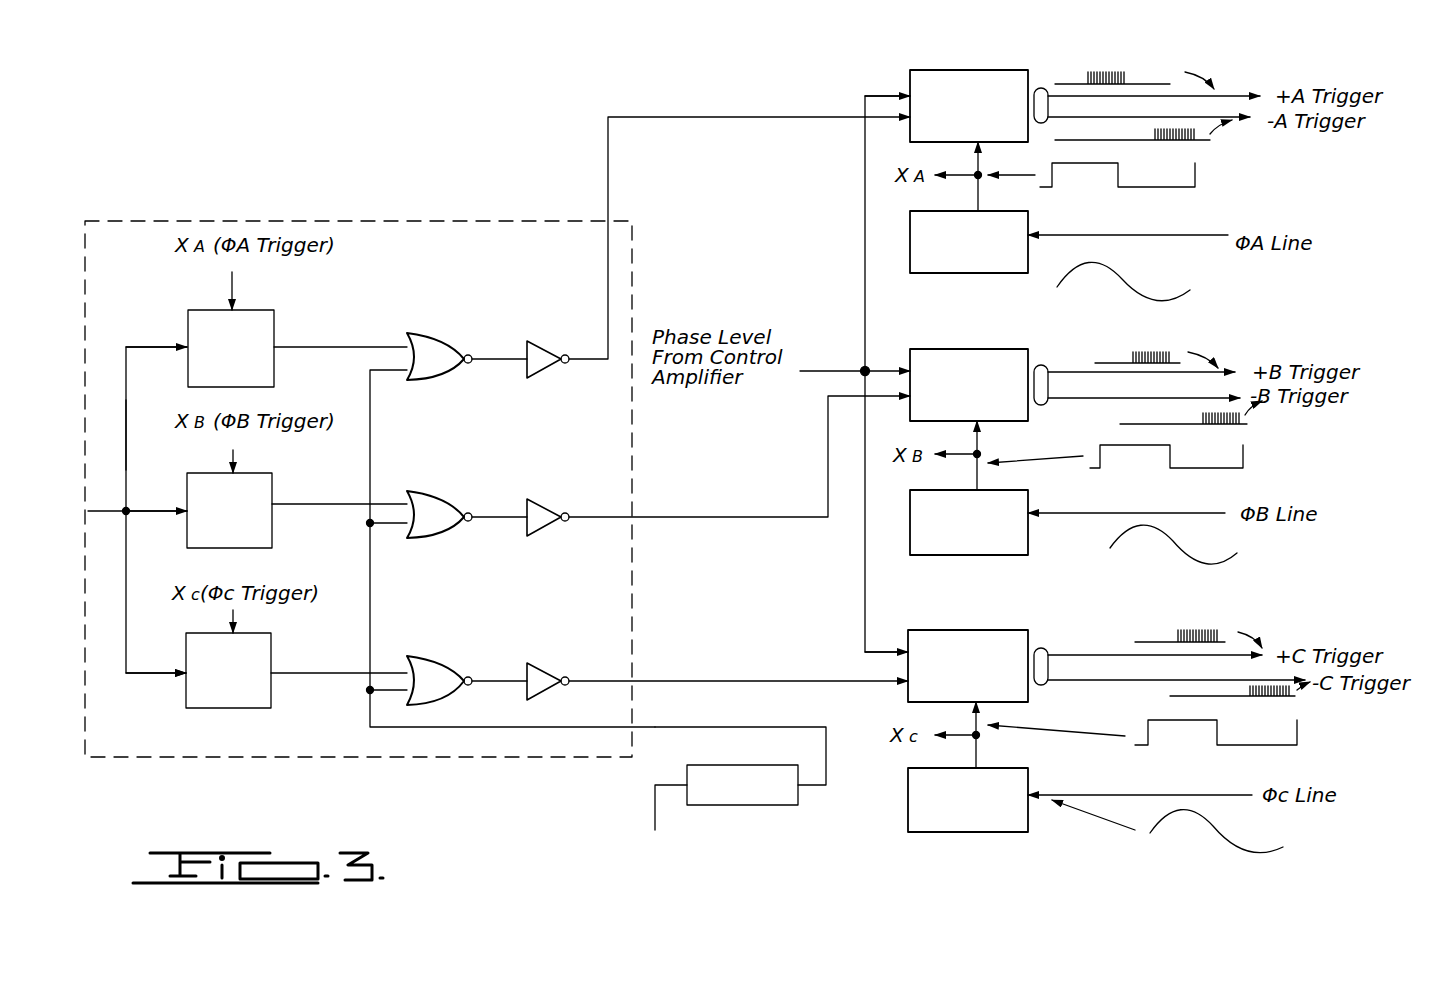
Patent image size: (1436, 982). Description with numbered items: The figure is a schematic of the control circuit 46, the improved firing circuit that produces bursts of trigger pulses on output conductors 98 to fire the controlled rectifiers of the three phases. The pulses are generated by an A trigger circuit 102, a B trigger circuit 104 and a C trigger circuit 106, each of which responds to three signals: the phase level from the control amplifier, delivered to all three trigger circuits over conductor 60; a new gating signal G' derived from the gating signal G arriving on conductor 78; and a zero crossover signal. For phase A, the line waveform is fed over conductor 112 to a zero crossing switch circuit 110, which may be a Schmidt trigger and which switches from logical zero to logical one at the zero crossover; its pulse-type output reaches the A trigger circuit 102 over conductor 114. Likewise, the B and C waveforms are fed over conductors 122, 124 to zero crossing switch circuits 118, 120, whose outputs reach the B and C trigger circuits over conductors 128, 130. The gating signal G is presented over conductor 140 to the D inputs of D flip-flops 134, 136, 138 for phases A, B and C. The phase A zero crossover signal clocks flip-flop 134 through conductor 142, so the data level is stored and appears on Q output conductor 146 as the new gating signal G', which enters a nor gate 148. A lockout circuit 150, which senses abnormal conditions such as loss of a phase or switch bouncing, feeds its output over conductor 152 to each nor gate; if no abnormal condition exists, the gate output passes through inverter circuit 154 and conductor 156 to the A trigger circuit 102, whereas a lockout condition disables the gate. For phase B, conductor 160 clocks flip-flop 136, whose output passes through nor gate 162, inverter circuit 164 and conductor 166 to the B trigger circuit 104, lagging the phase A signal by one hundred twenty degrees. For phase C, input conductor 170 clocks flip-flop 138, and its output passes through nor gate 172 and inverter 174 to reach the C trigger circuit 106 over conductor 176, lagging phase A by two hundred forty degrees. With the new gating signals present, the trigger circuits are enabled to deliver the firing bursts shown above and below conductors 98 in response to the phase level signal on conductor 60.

The control circuit 46 is at (752, 246).
The conductor 60 is at (841, 371).
The conductor 78 is at (98, 515).
The output conductors 98 is at (1041, 88).
The A trigger circuit 102 is at (970, 70).
The B trigger circuit 104 is at (940, 349).
The C trigger circuit 106 is at (930, 630).
The zero crossing switch circuit 110 is at (1030, 222).
The conductor 112 is at (1192, 235).
The conductor 114 is at (976, 193).
The zero crossing switch circuit 118 is at (1028, 541).
The zero crossing switch circuit 120 is at (960, 832).
The conductor 122 is at (1178, 513).
The conductor 124 is at (1192, 795).
The conductor 128 is at (980, 447).
The conductor 130 is at (980, 727).
The D flip-flop 134 is at (274, 320).
The D flip-flop 136 is at (272, 487).
The D flip-flop 138 is at (271, 663).
The conductor 140 is at (128, 453).
The conductor 142 is at (234, 287).
The Q output conductor 146 is at (298, 347).
The nor gate 148 is at (436, 332).
The lockout circuit 150 is at (712, 805).
The conductor 152 is at (655, 727).
The inverter circuit 154 is at (543, 340).
The conductor 156 is at (694, 117).
The conductor 160 is at (235, 456).
The nor gate 162 is at (432, 490).
The inverter circuit 164 is at (543, 498).
The conductor 166 is at (712, 517).
The input conductor 170 is at (235, 620).
The nor gate 172 is at (428, 656).
The inverter 174 is at (543, 664).
The conductor 176 is at (745, 681).